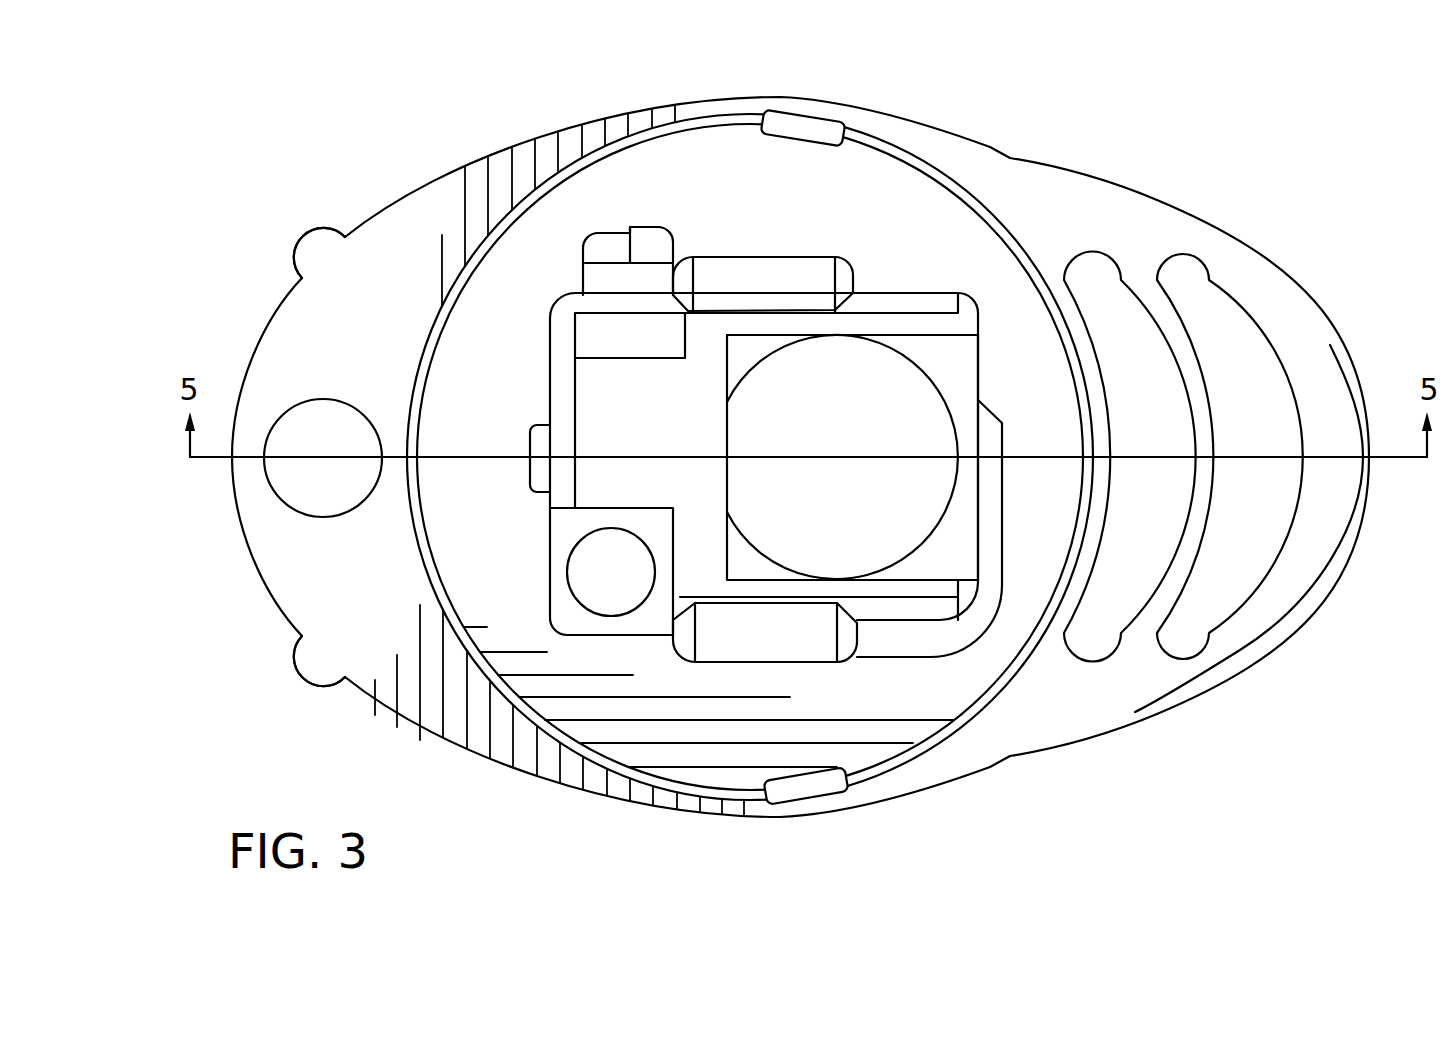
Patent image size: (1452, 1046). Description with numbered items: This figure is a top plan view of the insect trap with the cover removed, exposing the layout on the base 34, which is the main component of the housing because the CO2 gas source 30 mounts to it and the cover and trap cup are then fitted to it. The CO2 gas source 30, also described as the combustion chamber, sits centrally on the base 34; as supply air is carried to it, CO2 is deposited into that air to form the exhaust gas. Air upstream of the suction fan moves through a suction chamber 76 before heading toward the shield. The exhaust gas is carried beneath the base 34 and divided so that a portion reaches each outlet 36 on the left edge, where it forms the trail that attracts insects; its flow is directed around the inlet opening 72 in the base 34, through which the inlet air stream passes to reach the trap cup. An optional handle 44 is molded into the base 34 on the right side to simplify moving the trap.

The CO2 gas source 30 is at (627, 337).
The base 34 is at (1063, 702).
The outlet 36 is at (313, 250).
The handle 44 is at (1266, 297).
The inlet opening 72 is at (332, 482).
The suction chamber 76 is at (818, 533).